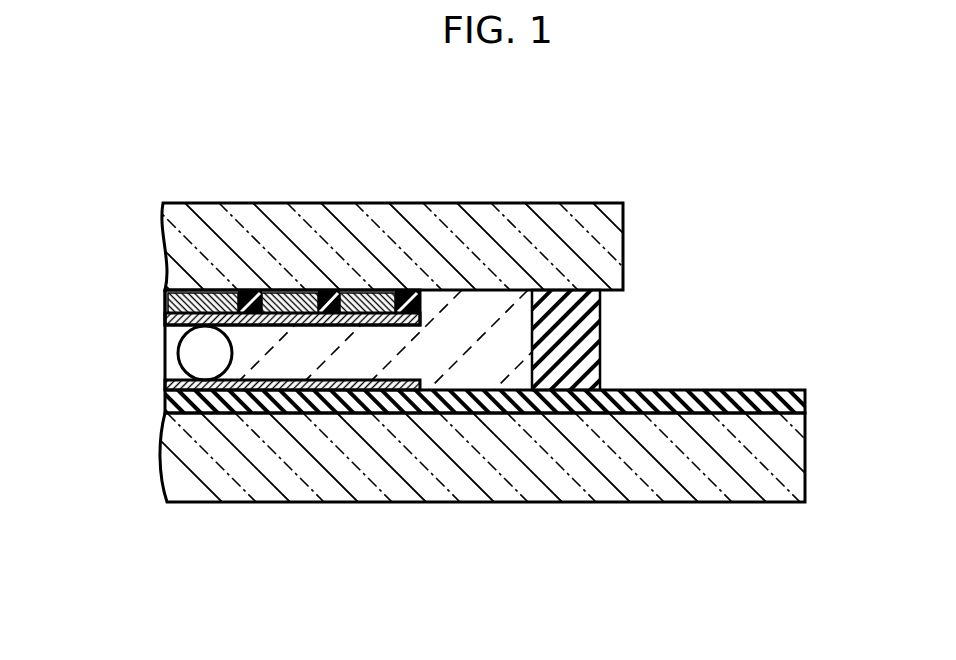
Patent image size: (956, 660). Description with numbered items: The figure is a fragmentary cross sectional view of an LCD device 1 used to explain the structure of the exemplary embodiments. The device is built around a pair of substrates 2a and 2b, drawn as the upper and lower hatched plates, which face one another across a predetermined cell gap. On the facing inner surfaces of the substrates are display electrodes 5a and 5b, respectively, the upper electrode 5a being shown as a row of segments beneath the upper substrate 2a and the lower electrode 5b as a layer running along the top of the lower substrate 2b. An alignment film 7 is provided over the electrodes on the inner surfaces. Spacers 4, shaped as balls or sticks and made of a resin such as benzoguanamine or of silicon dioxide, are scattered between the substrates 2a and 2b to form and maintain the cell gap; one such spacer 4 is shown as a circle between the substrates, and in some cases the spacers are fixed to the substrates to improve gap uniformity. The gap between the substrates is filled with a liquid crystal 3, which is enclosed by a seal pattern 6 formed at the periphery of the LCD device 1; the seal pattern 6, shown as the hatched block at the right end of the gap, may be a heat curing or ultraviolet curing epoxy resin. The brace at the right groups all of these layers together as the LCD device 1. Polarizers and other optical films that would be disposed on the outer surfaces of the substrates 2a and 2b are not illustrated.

The LCD device 1 is at (827, 188).
The substrate 2a is at (297, 237).
The substrate 2b is at (342, 467).
The liquid crystal 3 is at (488, 317).
The spacer 4 is at (197, 347).
The display electrode 5a is at (383, 292).
The display electrode 5b is at (460, 417).
The seal pattern 6 is at (575, 337).
The alignment film 7 is at (163, 317).